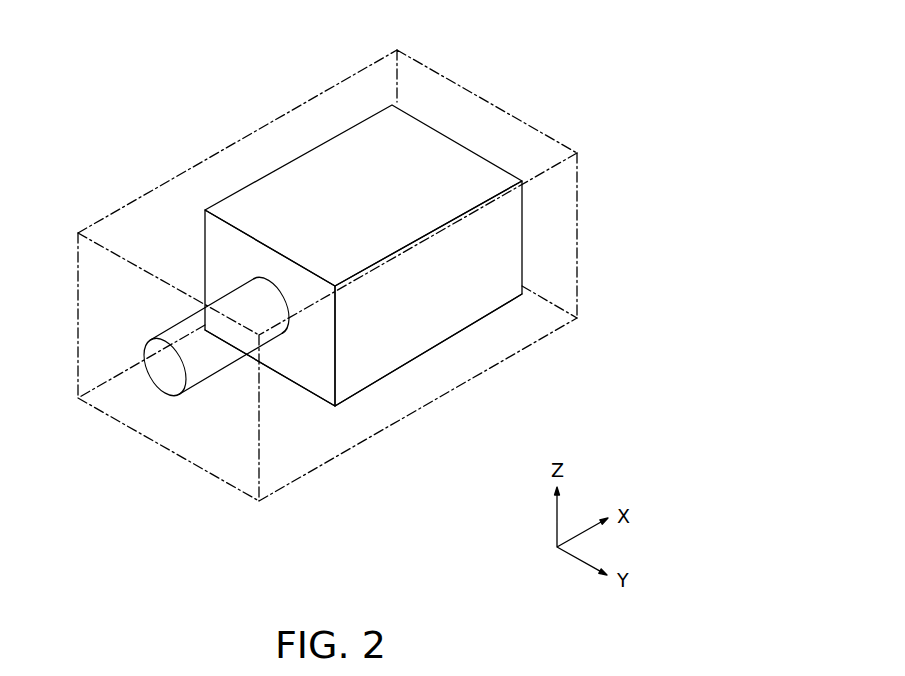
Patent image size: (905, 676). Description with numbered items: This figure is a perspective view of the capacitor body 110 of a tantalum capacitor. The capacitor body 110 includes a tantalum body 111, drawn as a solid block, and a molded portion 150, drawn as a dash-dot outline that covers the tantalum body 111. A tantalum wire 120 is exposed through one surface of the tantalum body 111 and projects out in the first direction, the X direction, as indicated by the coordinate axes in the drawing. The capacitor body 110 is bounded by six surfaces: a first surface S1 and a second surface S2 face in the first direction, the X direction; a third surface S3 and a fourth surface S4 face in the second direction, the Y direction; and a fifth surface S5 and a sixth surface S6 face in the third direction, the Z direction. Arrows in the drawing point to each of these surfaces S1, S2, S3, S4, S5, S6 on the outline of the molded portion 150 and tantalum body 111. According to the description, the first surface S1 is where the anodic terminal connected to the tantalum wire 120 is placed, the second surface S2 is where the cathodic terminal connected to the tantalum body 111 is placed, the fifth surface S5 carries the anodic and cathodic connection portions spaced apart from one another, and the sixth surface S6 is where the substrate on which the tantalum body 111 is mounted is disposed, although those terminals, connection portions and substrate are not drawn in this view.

The capacitor body 110 is at (120, 118).
The tantalum body 111 is at (343, 274).
The tantalum wire 120 is at (158, 348).
The molded portion 150 is at (315, 272).
The first surface S1 is at (216, 428).
The second surface S2 is at (500, 143).
The third surface S3 is at (460, 318).
The fourth surface S4 is at (124, 231).
The fifth surface S5 is at (383, 144).
The sixth surface S6 is at (409, 389).